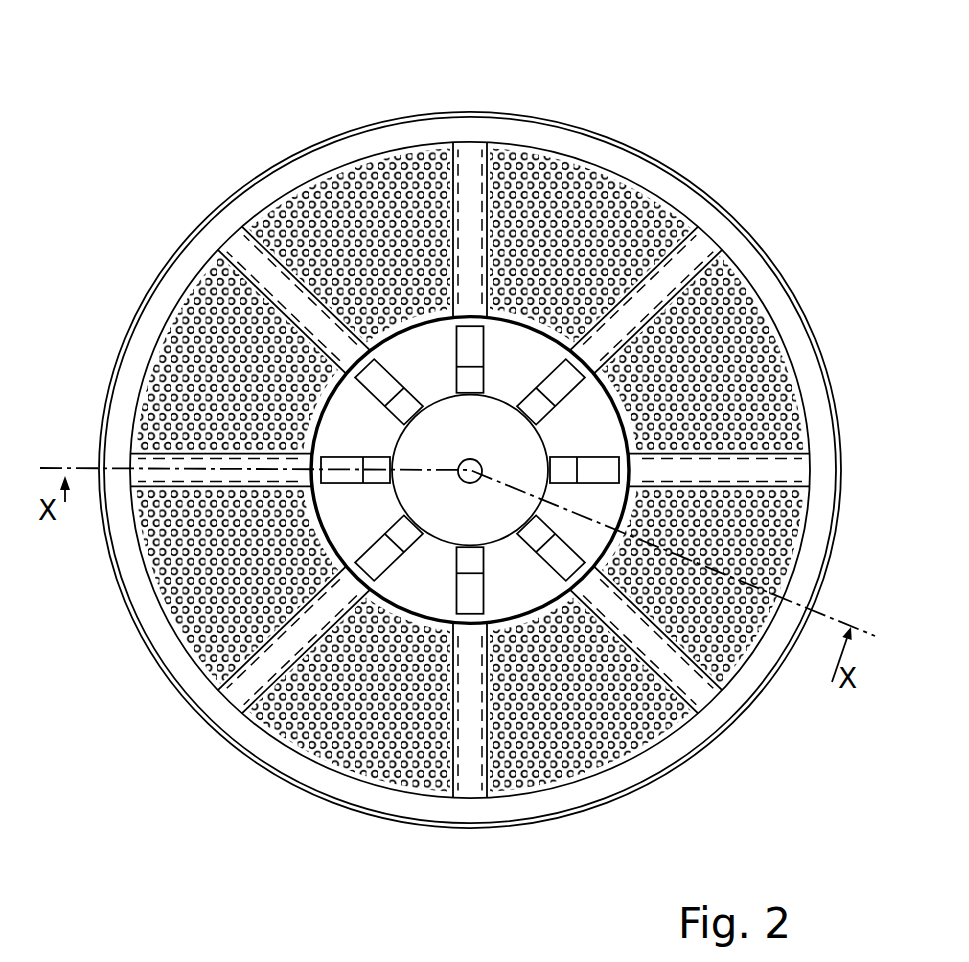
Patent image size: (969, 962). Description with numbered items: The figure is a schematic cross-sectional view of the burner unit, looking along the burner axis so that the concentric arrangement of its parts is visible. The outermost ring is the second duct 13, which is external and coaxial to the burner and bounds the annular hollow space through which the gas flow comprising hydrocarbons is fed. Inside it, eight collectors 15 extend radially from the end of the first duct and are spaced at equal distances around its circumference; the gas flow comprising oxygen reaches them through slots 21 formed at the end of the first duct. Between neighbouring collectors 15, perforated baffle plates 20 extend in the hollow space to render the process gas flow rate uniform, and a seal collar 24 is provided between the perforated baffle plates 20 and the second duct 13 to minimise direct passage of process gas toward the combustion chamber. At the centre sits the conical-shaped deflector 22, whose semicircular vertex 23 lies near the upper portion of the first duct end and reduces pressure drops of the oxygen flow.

The second duct 13 is at (258, 188).
The collectors 15 is at (448, 434).
The perforated baffle plates 20 is at (297, 708).
The slots 21 is at (465, 340).
The conical-shaped deflector 22 is at (456, 519).
The vertex 23 is at (470, 458).
The seal collar 24 is at (756, 262).